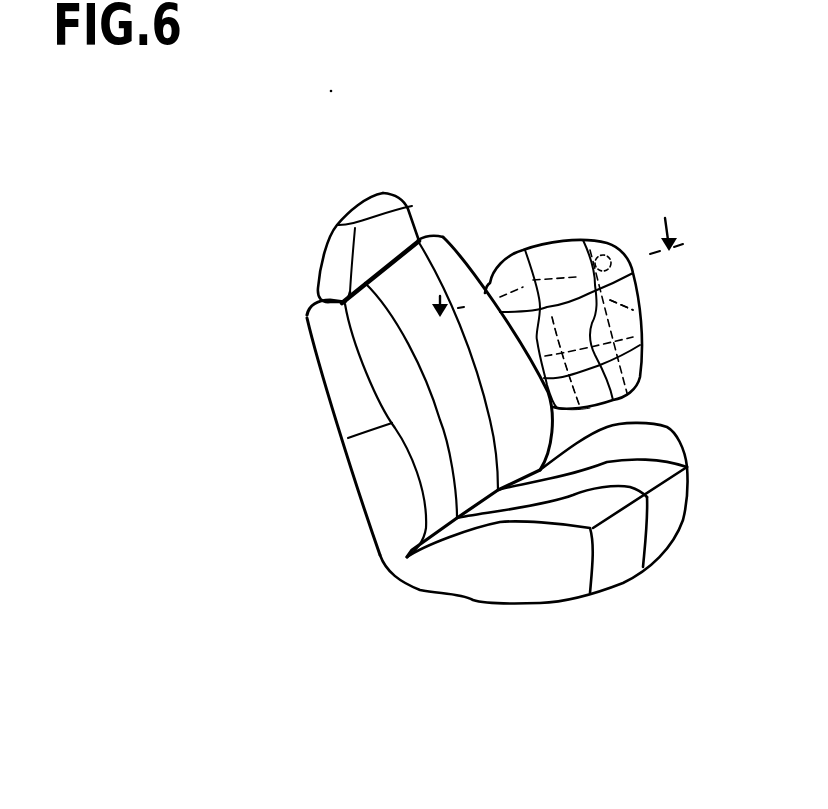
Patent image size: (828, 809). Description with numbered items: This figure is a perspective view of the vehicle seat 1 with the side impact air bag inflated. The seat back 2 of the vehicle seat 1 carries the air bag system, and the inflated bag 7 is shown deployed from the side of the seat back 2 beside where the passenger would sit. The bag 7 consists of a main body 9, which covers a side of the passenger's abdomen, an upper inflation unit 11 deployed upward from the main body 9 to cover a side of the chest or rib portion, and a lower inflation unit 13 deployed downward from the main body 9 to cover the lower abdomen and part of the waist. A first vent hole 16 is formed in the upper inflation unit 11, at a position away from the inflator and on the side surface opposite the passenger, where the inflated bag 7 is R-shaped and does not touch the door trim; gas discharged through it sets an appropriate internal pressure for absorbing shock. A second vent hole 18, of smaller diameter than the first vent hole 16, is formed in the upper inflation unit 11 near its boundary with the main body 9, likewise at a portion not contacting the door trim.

The vehicle seat 1 is at (474, 610).
The seat back 2 is at (348, 438).
The bag 7 is at (558, 238).
The main body 9 is at (576, 355).
The upper inflation unit 11 is at (513, 268).
The lower inflation unit 13 is at (613, 398).
The first vent hole 16 is at (611, 248).
The second vent hole 18 is at (640, 307).